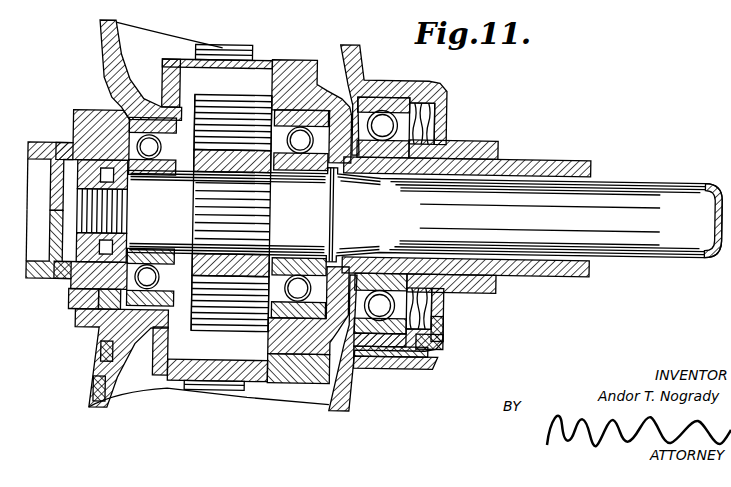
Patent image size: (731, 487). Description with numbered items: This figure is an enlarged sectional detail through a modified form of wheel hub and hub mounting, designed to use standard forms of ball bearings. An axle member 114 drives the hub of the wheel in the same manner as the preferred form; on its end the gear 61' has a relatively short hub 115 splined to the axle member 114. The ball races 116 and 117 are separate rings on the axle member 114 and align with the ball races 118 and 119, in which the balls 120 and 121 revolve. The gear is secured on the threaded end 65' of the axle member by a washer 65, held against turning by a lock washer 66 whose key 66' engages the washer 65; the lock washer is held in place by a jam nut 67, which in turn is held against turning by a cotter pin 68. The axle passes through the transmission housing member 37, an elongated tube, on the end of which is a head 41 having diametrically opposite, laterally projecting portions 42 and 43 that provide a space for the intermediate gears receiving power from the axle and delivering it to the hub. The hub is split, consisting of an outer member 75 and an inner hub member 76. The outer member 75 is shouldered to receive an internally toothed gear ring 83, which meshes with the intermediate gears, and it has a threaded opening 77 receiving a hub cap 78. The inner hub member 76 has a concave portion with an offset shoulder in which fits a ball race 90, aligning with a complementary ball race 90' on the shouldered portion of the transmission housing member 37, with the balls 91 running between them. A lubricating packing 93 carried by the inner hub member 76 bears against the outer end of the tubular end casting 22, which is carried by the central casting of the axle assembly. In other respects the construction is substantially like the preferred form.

The tubular end casting 22 is at (459, 233).
The transmission housing member 37 is at (478, 232).
The head 41 is at (381, 251).
The laterally projecting portion 42 is at (255, 184).
The laterally projecting portion 43 is at (217, 384).
The gear 61' is at (298, 389).
The washer 65 is at (102, 181).
The threaded end of the axle member 65' is at (45, 196).
The lock washer 66 is at (79, 118).
The key 66' is at (65, 279).
The jam nut 67 is at (76, 143).
The cotter pin 68 is at (63, 234).
The outer member of the split hub 75 is at (185, 215).
The inner hub member 76 is at (388, 235).
The threaded opening 77 is at (65, 273).
The hub cap 78 is at (51, 310).
The internally toothed gear ring 83 is at (203, 35).
The ball race 90 is at (456, 354).
The complementary ball race 90' is at (455, 314).
The balls 91 is at (466, 337).
The lubricating packing 93 is at (444, 124).
The axle member 114 is at (425, 216).
The hub of the gear 115 is at (143, 370).
The ball race 116 is at (84, 319).
The ball race 117 is at (389, 361).
The ball race 118 is at (78, 387).
The ball race 119 is at (395, 388).
The balls 120 is at (82, 356).
The balls 121 is at (390, 375).